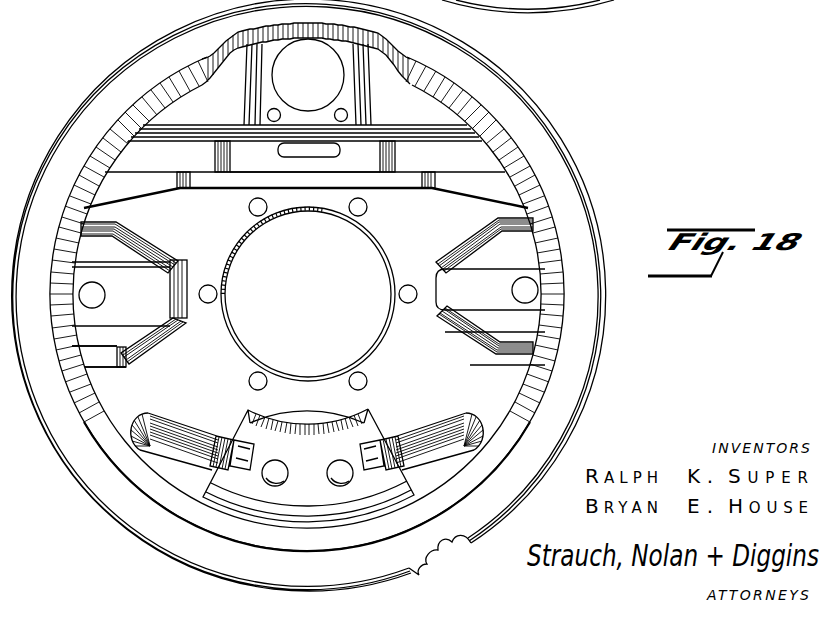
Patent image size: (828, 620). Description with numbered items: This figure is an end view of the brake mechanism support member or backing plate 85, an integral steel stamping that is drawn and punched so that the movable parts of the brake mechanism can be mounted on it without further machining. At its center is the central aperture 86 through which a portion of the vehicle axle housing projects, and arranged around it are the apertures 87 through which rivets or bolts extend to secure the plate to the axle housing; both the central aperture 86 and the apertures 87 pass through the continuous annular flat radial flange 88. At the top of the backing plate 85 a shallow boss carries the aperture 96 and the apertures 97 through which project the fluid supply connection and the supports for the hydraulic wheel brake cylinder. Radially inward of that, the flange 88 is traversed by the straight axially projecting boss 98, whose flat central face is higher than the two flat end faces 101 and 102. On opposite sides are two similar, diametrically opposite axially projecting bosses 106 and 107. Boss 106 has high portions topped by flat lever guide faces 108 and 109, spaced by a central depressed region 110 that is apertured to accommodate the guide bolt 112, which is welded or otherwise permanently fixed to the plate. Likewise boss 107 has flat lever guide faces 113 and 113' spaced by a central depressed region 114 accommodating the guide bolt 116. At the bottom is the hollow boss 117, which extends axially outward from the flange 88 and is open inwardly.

The backing plate 85 is at (548, 22).
The central aperture 86 is at (255, 220).
The apertures 87 is at (256, 374).
The annular flat radial flange 88 is at (410, 366).
The aperture 96 is at (289, 50).
The apertures 97 is at (337, 110).
The straight axially outwardly projecting boss 98 is at (377, 163).
The flat end face 101 is at (416, 147).
The flat end face 102 is at (178, 150).
The boss 106 is at (470, 225).
The boss 107 is at (197, 261).
The flat lever guide face 108 is at (498, 250).
The flat lever guide face 109 is at (497, 334).
The central depressed region 110 is at (457, 299).
The guide bolt 112 is at (513, 288).
The flat lever guide face 113 is at (129, 237).
The flat lever guide face 113' is at (122, 365).
The central depressed region 114 is at (168, 312).
The guide bolt 116 is at (95, 283).
The hollow boss 117 is at (352, 443).